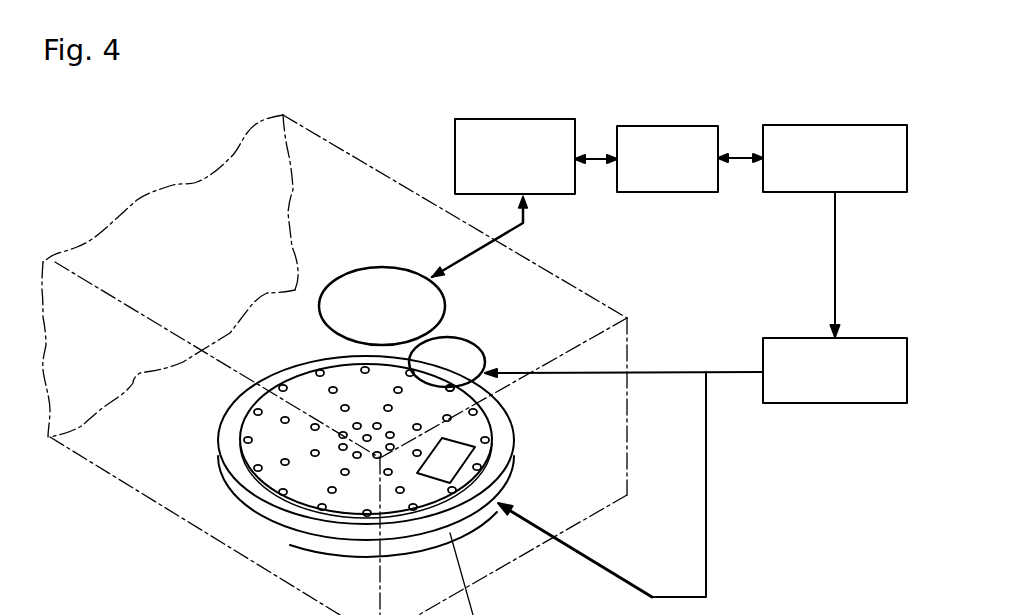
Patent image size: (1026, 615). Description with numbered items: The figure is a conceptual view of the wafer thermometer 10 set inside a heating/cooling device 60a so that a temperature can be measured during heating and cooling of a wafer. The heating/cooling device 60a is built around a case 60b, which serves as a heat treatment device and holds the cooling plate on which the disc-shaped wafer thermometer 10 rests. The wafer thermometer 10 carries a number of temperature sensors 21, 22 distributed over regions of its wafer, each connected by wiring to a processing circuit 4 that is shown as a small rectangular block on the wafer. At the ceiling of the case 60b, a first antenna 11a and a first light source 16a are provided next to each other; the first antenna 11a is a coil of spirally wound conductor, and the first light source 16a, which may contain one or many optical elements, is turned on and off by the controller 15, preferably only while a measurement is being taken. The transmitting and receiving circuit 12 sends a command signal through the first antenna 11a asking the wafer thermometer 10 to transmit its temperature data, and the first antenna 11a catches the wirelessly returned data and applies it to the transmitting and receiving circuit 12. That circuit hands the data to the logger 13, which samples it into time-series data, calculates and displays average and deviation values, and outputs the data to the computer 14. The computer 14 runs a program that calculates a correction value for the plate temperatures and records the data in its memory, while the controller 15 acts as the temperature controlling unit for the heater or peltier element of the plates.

The processing circuit 4 is at (455, 476).
The wafer thermometer 10 is at (495, 450).
The first antenna 11a is at (397, 268).
The transmitting and receiving circuit 12 is at (522, 118).
The logger 13 is at (669, 125).
The computer 14 is at (835, 123).
The controller 15 is at (876, 337).
The first light source 16a is at (480, 348).
The temperature sensor 21 is at (452, 408).
The temperature sensor 22 is at (497, 405).
The heating/cooling device 60a is at (646, 322).
The case 60b is at (473, 216).